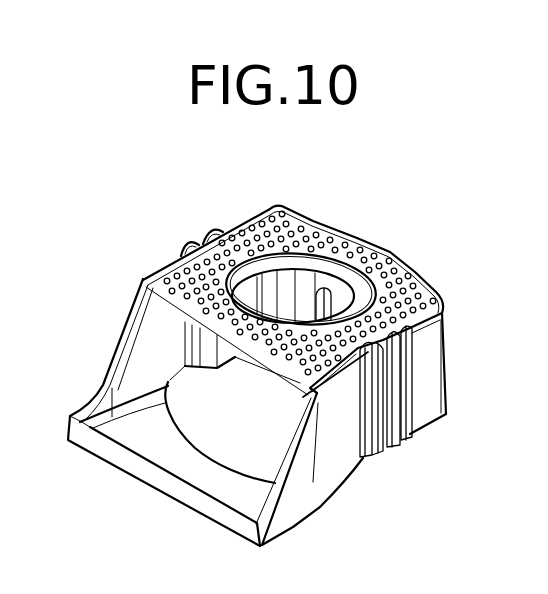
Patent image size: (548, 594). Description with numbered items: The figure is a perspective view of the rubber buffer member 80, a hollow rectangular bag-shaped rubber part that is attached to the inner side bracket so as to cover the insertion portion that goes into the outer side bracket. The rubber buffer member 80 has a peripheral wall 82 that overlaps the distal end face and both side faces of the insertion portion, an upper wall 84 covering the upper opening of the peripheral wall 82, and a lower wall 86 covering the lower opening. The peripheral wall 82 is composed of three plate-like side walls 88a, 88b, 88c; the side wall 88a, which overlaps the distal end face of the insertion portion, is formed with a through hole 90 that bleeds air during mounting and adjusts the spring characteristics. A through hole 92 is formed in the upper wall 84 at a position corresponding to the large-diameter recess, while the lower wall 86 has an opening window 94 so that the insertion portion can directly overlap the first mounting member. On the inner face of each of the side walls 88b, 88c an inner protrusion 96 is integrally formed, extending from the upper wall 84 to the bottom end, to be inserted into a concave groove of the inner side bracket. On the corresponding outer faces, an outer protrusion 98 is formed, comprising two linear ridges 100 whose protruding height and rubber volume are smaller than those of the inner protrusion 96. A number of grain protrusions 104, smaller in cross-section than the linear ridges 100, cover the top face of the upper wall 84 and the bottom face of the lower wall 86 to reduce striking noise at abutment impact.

The rubber buffer member 80 is at (412, 186).
The peripheral wall 82 is at (451, 355).
The upper wall 84 is at (303, 231).
The lower wall 86 is at (217, 488).
The side wall 88a is at (326, 284).
The side wall 88b is at (118, 350).
The side wall 88c is at (343, 438).
The through hole 90 is at (340, 300).
The through hole 92 is at (272, 258).
The opening window 94 is at (213, 456).
The inner protrusion 96 is at (172, 384).
The outer protrusion 98 is at (175, 258).
The linear ridge 100 is at (211, 231).
The grain protrusion 104 is at (420, 293).